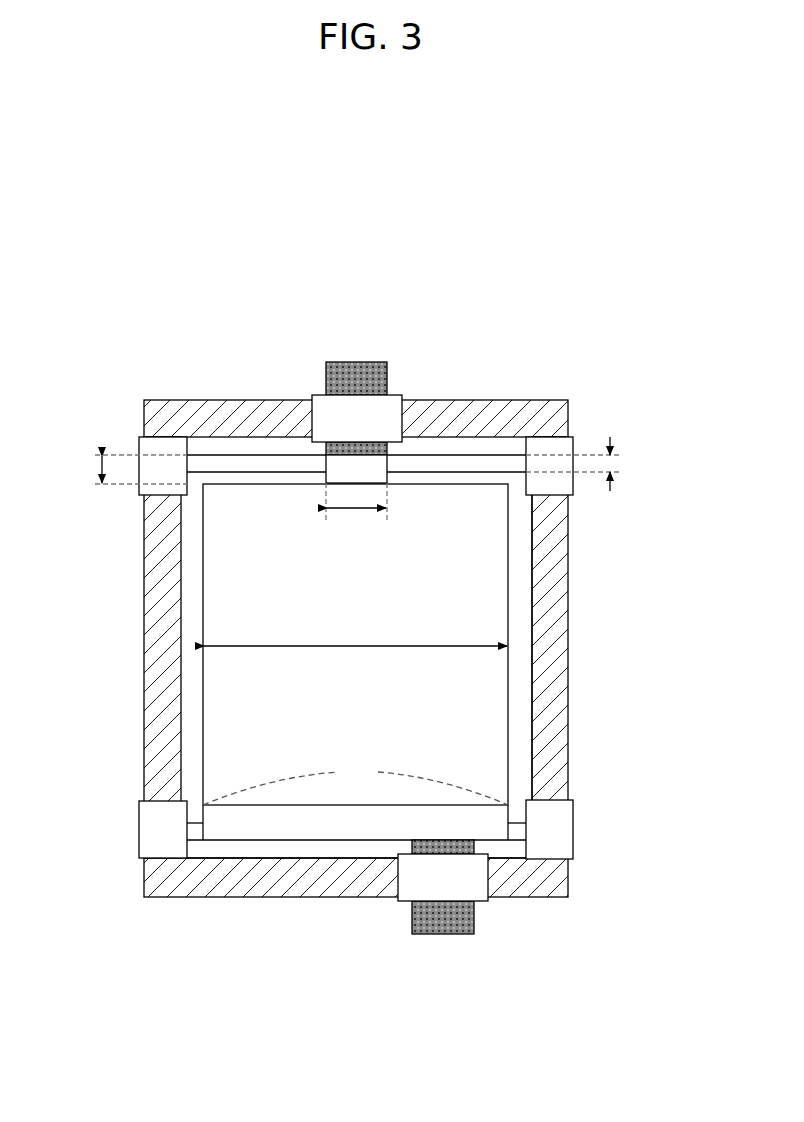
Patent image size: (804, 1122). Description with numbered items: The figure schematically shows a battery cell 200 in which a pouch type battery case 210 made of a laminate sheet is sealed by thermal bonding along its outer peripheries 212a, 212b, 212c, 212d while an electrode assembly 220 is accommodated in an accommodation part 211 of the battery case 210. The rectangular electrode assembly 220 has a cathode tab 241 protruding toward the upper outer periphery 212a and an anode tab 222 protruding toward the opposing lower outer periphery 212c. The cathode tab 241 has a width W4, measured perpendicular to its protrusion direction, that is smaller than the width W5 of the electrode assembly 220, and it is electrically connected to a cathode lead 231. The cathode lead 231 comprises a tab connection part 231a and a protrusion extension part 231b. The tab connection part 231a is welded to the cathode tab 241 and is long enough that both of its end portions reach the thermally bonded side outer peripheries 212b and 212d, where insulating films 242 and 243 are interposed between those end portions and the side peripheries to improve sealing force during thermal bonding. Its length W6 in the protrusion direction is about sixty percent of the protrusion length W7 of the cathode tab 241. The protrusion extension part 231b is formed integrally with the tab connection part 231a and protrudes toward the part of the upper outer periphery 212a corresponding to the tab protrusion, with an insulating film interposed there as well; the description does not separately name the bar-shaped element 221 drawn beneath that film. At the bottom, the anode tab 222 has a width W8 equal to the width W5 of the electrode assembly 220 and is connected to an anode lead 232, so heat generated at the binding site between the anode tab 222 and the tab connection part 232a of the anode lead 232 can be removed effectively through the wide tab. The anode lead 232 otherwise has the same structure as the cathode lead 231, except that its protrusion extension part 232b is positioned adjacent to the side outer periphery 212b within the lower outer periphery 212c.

The battery cell 200 is at (178, 288).
The battery case 210 is at (361, 650).
The accommodation part 211 is at (518, 670).
The upper outer periphery 212a is at (530, 407).
The side outer periphery 212b is at (552, 727).
The lower outer periphery 212c is at (530, 888).
The side outer periphery 212d is at (162, 740).
The electrode assembly 220 is at (203, 676).
The first electrode 221 is at (387, 478).
The anode tab 222 is at (510, 818).
The cathode lead 231 is at (363, 364).
The tab connection part 231a is at (450, 455).
The protrusion extension part 231b is at (368, 362).
The anode lead 232 is at (408, 946).
The tab connection part 232a is at (352, 843).
The protrusion extension part 232b is at (430, 935).
The cathode tab 241 is at (312, 417).
The insulating film 242 is at (573, 487).
The insulating film 243 is at (139, 492).
The width of cathode tab W4 is at (356, 512).
The width of electrode assembly W5 is at (355, 632).
The length of tab connection part W6 is at (591, 464).
The protrusion length of cathode tab W7 is at (124, 470).
The width of anode tab W8 is at (355, 783).